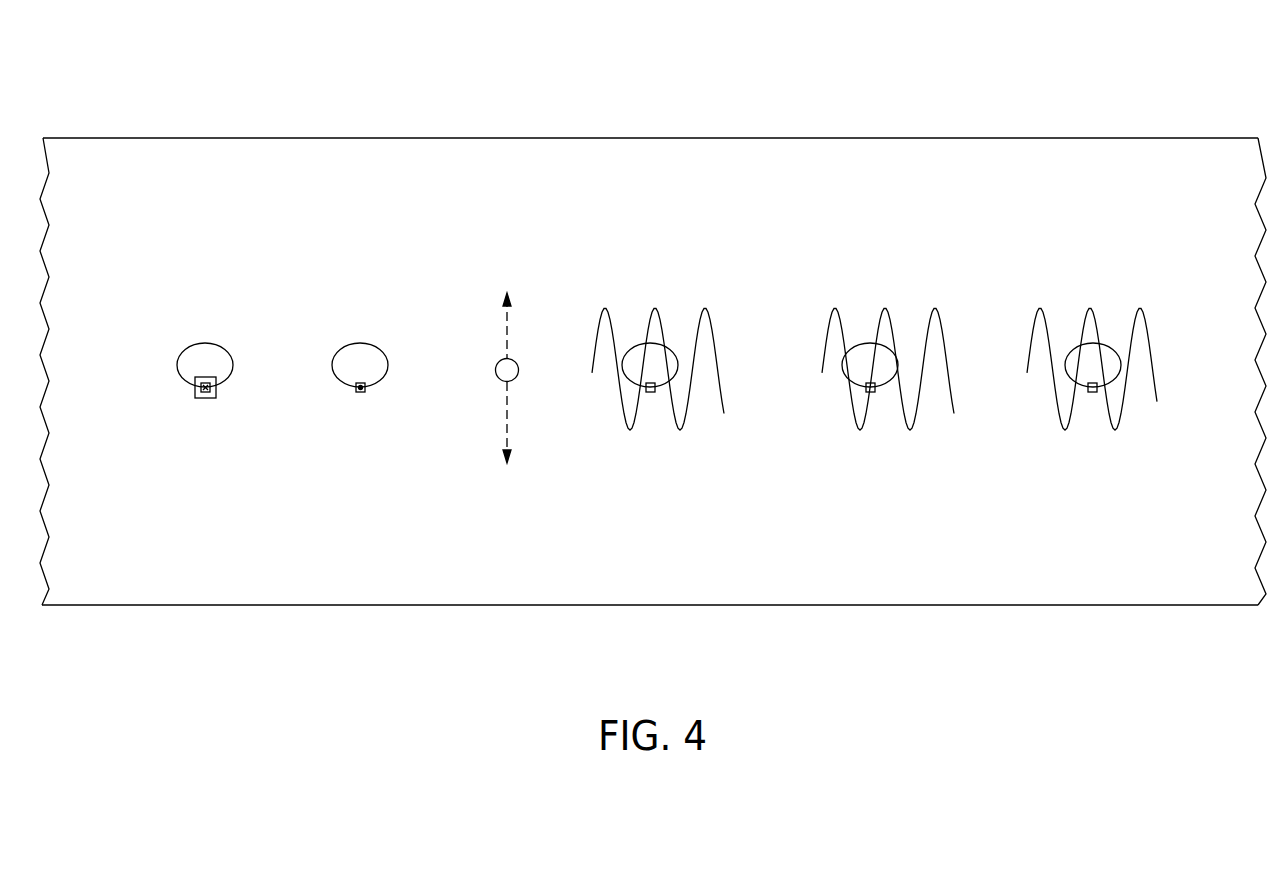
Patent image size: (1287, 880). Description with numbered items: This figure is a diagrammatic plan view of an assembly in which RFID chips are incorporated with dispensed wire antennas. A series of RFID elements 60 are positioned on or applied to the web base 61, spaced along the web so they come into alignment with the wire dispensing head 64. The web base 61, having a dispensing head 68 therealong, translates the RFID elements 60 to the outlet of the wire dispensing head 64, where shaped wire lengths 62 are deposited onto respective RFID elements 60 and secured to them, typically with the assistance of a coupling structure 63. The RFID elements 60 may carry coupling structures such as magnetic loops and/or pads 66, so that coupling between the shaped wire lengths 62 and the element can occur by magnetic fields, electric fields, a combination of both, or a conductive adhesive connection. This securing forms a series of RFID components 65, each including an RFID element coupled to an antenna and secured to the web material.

The RFID element 60 is at (205, 399).
The web base 61 is at (562, 138).
The shaped wire length 62 is at (655, 308).
The coupling structure 63 is at (332, 365).
The wire dispensing head 64 is at (505, 450).
The RFID component 65 is at (898, 362).
The magnetic loops and/or pads 66 is at (203, 378).
The dispensing head 68 is at (211, 224).